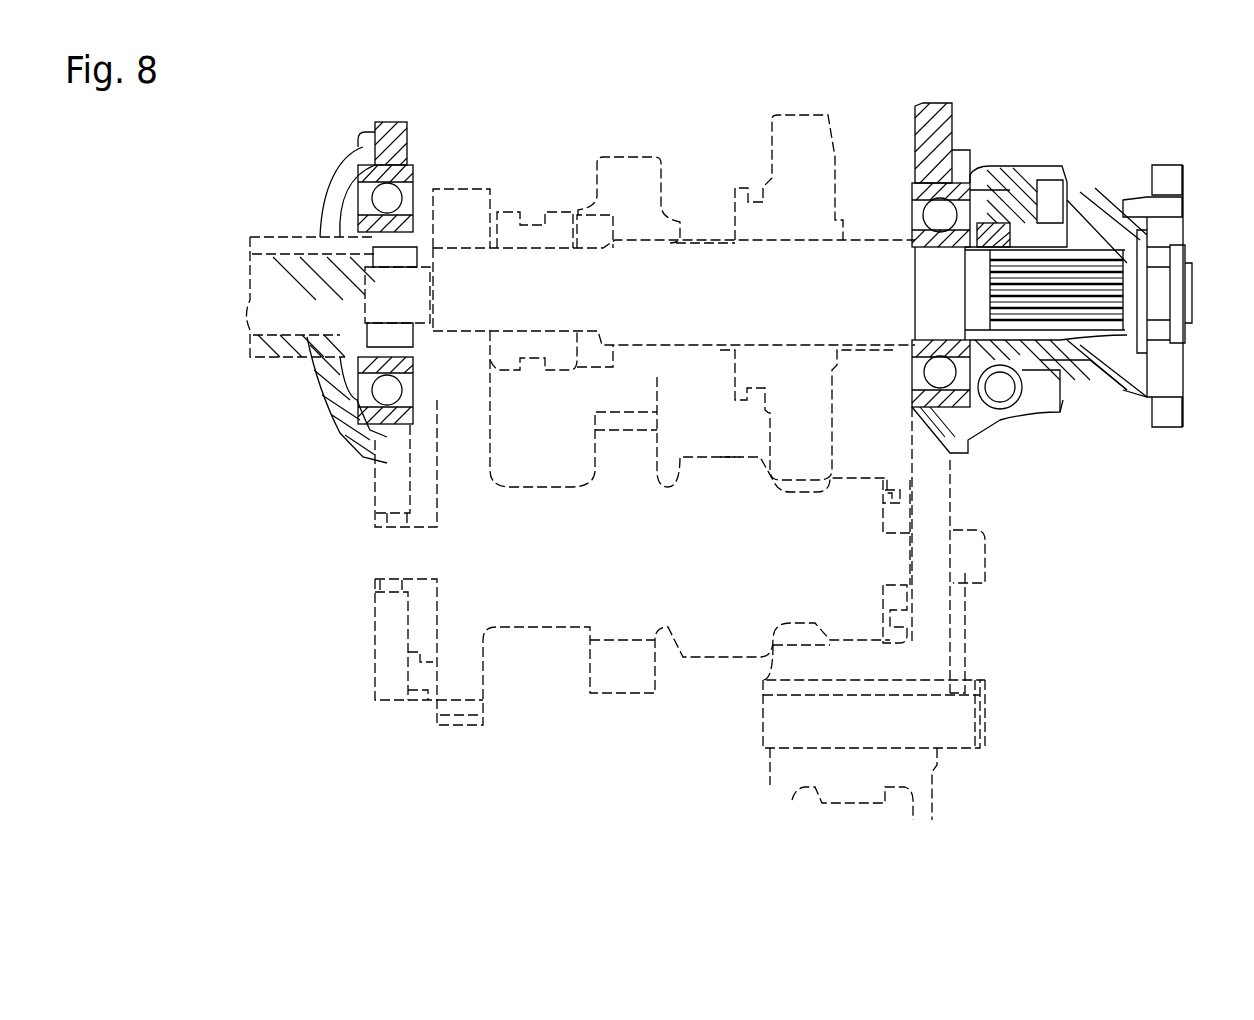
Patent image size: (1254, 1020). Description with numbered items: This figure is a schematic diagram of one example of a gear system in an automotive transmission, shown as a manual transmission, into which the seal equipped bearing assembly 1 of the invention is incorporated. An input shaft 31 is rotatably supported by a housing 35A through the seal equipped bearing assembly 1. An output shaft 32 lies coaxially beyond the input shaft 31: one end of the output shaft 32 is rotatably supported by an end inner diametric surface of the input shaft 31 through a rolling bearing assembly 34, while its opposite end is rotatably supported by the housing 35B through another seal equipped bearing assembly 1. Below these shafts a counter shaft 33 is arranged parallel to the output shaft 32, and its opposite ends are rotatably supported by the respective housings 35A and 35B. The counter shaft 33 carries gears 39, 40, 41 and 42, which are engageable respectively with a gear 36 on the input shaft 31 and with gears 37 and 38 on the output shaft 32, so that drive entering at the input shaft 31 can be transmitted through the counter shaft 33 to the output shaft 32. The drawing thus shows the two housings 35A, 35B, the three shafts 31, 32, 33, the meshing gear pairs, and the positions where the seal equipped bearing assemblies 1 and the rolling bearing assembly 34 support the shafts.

The seal equipped bearing assembly 1 is at (345, 200).
The input shaft 31 is at (262, 292).
The output shaft 32 is at (535, 265).
The counter shaft 33 is at (387, 550).
The rolling bearing assembly 34 is at (367, 335).
The housing 35A is at (388, 122).
The housing 35B is at (940, 110).
The gear 36 is at (460, 189).
The gear 37 is at (625, 158).
The gear 38 is at (805, 115).
The gear 39 is at (478, 722).
The gear 40 is at (615, 697).
The gear 41 is at (720, 657).
The gear 42 is at (863, 477).